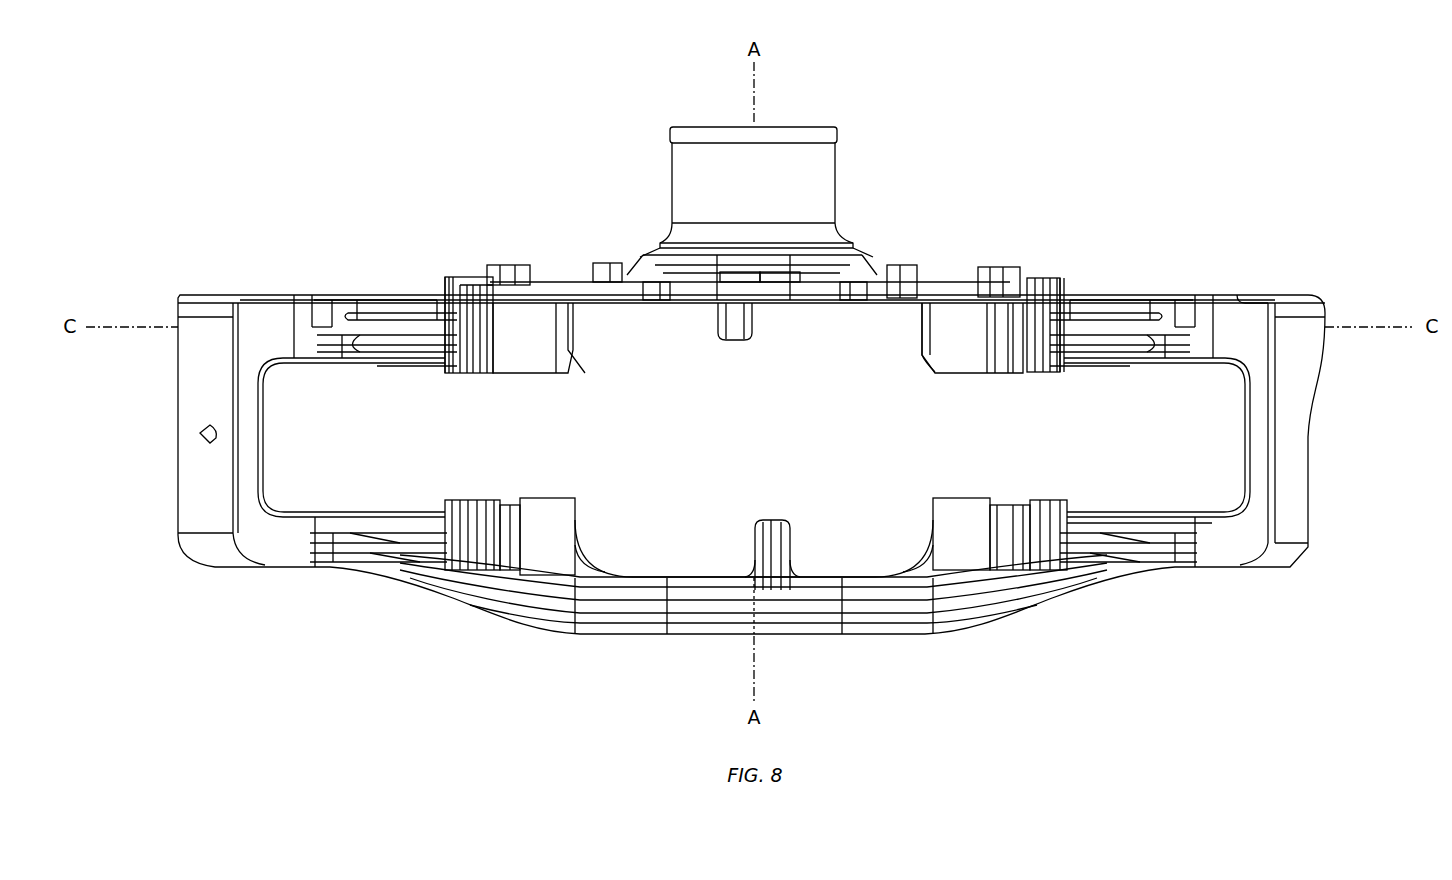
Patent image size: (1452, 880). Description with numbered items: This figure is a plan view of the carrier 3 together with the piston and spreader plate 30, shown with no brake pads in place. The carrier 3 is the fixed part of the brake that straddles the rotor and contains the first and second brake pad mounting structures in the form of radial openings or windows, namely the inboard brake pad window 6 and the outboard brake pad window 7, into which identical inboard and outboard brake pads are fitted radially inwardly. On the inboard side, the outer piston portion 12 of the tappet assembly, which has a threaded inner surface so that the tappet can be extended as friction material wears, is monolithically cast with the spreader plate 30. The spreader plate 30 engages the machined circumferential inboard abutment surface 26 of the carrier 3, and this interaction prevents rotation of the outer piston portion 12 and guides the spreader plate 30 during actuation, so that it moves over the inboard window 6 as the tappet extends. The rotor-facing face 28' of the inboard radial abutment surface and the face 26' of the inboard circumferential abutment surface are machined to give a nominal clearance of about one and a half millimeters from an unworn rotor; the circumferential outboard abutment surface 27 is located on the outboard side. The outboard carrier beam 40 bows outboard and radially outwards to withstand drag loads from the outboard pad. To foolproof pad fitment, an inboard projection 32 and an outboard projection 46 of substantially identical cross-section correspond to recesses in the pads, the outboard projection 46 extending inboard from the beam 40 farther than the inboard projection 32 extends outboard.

The carrier 3 is at (1225, 327).
The inboard brake pad window 6 is at (955, 328).
The outboard brake pad window 7 is at (965, 539).
The outer piston portion 12 is at (788, 165).
The circumferential inboard abutment surface 26 is at (752, 274).
The face of circumferential inboard abutment surface 26' is at (758, 367).
The circumferential outboard abutment surface 27 is at (524, 558).
The face of radial inboard abutment surface 28' is at (762, 354).
The spreader plate 30 is at (822, 290).
The inboard projection 32 is at (737, 330).
The outboard carrier beam 40 is at (857, 606).
The outboard projection 46 is at (770, 547).